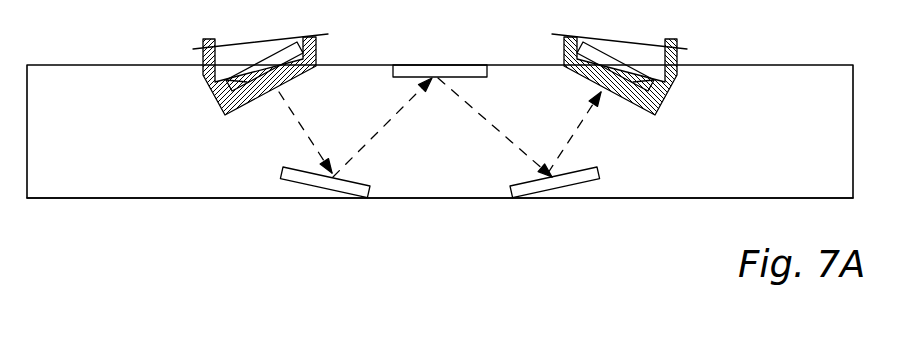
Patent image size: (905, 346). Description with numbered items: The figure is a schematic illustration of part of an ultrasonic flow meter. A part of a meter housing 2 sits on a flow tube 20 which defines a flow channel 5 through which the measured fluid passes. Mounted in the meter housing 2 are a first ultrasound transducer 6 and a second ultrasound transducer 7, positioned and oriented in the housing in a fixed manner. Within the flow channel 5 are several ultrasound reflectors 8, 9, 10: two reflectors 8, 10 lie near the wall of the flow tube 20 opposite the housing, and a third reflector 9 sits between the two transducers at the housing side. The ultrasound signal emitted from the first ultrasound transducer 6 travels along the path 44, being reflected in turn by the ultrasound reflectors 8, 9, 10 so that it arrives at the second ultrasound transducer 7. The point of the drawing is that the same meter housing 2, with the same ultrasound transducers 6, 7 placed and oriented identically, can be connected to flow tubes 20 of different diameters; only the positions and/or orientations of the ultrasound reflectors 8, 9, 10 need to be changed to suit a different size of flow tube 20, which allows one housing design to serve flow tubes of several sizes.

The meter housing 2 is at (317, 52).
The flow channel 5 is at (82, 152).
The first ultrasound transducer 6 is at (214, 103).
The second ultrasound transducer 7 is at (661, 95).
The ultrasound reflector 8 is at (359, 190).
The ultrasound reflector 9 is at (403, 68).
The ultrasound reflector 10 is at (600, 170).
The flow tube 20 is at (123, 197).
The path of the ultrasound signal 44 is at (564, 146).